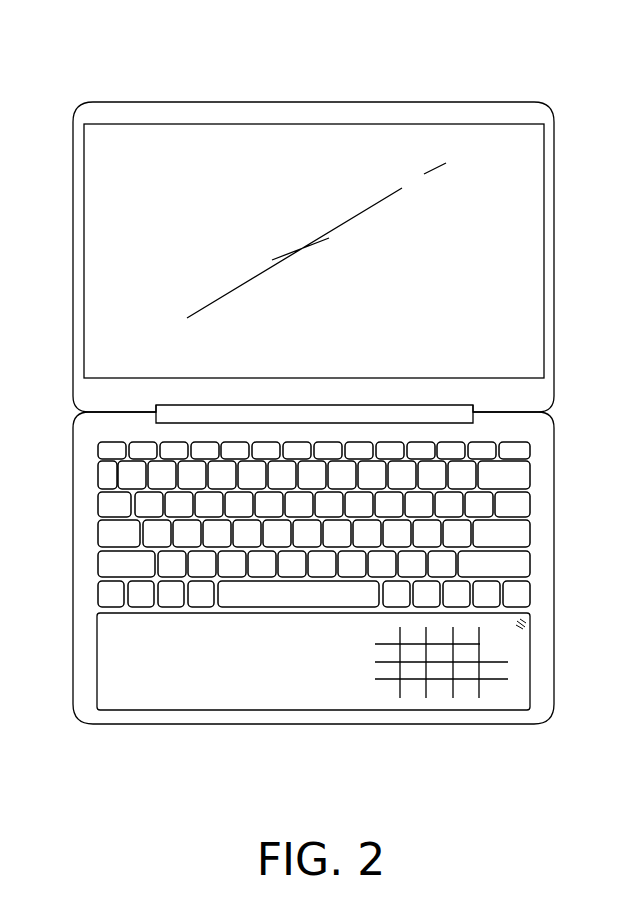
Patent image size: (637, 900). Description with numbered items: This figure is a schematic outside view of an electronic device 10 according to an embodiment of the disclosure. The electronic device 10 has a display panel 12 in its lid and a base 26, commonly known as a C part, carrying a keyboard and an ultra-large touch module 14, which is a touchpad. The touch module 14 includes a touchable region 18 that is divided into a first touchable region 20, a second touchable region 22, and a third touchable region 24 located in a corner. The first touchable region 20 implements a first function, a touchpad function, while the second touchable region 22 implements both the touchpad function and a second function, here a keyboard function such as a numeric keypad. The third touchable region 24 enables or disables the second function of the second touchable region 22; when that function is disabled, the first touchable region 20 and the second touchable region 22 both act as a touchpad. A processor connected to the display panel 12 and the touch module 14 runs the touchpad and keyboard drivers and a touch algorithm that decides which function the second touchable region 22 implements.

The electronic device 10 is at (51, 82).
The display panel 12 is at (525, 335).
The touch module 14 is at (352, 709).
The touchable region 18 is at (317, 709).
The first touchable region 20 is at (348, 693).
The second touchable region 22 is at (422, 673).
The third touchable region 24 is at (520, 695).
The base 26 is at (543, 593).